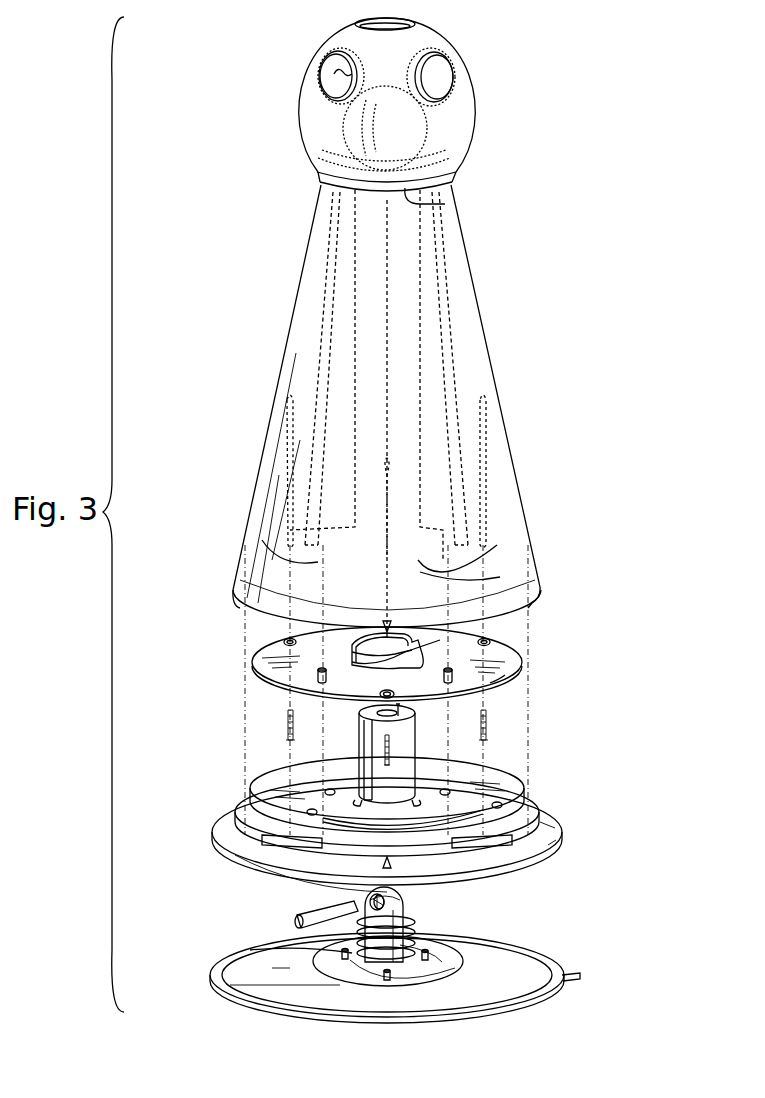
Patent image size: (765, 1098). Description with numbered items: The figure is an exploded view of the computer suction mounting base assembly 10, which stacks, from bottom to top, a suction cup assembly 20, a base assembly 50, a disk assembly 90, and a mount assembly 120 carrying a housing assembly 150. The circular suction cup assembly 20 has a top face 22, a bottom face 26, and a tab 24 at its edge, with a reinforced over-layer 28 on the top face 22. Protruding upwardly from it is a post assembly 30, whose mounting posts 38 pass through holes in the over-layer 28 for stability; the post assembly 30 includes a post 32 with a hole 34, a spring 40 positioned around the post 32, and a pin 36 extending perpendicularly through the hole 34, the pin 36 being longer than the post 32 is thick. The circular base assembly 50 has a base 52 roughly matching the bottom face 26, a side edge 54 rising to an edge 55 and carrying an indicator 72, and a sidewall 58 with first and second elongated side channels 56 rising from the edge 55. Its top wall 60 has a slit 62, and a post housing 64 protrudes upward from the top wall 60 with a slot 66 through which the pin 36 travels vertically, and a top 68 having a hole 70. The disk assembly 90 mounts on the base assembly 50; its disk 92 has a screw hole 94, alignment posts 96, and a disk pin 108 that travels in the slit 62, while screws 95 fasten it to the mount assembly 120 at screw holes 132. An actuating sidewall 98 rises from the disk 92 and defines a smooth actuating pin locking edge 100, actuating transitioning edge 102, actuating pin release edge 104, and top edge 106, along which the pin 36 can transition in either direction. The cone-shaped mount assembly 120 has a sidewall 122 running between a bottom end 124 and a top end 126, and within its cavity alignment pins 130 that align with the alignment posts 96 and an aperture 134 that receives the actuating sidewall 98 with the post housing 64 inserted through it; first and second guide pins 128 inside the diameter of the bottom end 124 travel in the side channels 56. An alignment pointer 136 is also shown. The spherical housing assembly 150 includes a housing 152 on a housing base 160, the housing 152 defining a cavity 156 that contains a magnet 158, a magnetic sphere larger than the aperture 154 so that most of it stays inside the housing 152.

The computer suction mounting base assembly 10 is at (658, 118).
The suction cup assembly 20 is at (575, 997).
The top face 22 is at (505, 962).
The tab 24 is at (577, 977).
The bottom face 26 is at (272, 968).
The over-layer 28 is at (445, 958).
The post assembly 30 is at (350, 890).
The post 32 is at (400, 893).
The hole 34 is at (400, 903).
The pin 36 is at (296, 920).
The mounting posts 38 is at (345, 956).
The spring 40 is at (330, 985).
The base assembly 50 is at (576, 806).
The base 52 is at (548, 823).
The side edge 54 is at (240, 818).
The edge 55 is at (300, 867).
The elongated side channels 56 is at (228, 835).
The sidewall 58 is at (255, 812).
The top wall 60 is at (495, 793).
The slit 62 is at (493, 793).
The post housing 64 is at (497, 755).
The slot 66 is at (359, 738).
The top 68 is at (405, 720).
The hole 70 is at (364, 716).
The indicator 72 is at (480, 858).
The disk assembly 90 is at (533, 665).
The disk 92 is at (500, 672).
The screw hole 94 is at (284, 642).
The screws 95 is at (287, 736).
The alignment post 96 is at (340, 655).
The actuating sidewall 98 is at (500, 692).
The actuating pin locking edge 100 is at (257, 651).
The actuating transitioning edge 102 is at (350, 665).
The actuating pin release edge 104 is at (417, 661).
The top edge 106 is at (500, 650).
The disk pin 108 is at (400, 706).
The mount assembly 120 is at (292, 272).
The sidewall 122 is at (472, 311).
The bottom end 124 is at (533, 610).
The top end 126 is at (445, 204).
The guide pins 128 is at (247, 607).
The alignment pins 130 is at (387, 578).
The screw holes 132 is at (323, 555).
The aperture 134 is at (500, 577).
The alignment pointer 136 is at (378, 628).
The housing assembly 150 is at (292, 85).
The housing 152 is at (318, 52).
The aperture 154 is at (446, 82).
The cavity 156 is at (343, 72).
The magnet 158 is at (422, 127).
The housing base 160 is at (432, 167).